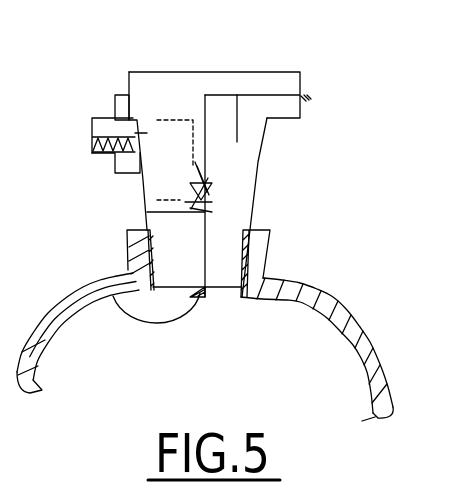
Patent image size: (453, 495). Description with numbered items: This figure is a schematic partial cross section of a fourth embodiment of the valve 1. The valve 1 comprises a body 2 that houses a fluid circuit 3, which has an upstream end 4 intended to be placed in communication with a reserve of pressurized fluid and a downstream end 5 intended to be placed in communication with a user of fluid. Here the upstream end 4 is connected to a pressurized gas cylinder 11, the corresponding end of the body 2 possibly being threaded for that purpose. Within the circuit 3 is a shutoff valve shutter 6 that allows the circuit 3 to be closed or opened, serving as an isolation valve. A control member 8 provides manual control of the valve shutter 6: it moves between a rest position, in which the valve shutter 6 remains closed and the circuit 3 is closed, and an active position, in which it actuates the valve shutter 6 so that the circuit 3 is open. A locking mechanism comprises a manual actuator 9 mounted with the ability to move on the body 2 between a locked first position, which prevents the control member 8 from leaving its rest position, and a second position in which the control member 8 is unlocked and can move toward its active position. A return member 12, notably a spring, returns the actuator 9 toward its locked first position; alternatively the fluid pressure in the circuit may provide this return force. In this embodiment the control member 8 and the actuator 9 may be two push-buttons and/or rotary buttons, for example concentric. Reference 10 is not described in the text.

The valve 1 is at (318, 224).
The body 2 is at (220, 258).
The fluid circuit 3 is at (237, 142).
The upstream end 4 is at (138, 318).
The downstream end 5 is at (303, 96).
The shutoff valve shutter 6 is at (147, 212).
The control member 8 is at (120, 104).
The manual actuator 9 is at (92, 117).
The channel 10 is at (157, 200).
The pressurized gas cylinder 11 is at (380, 352).
The return member 12 is at (95, 160).